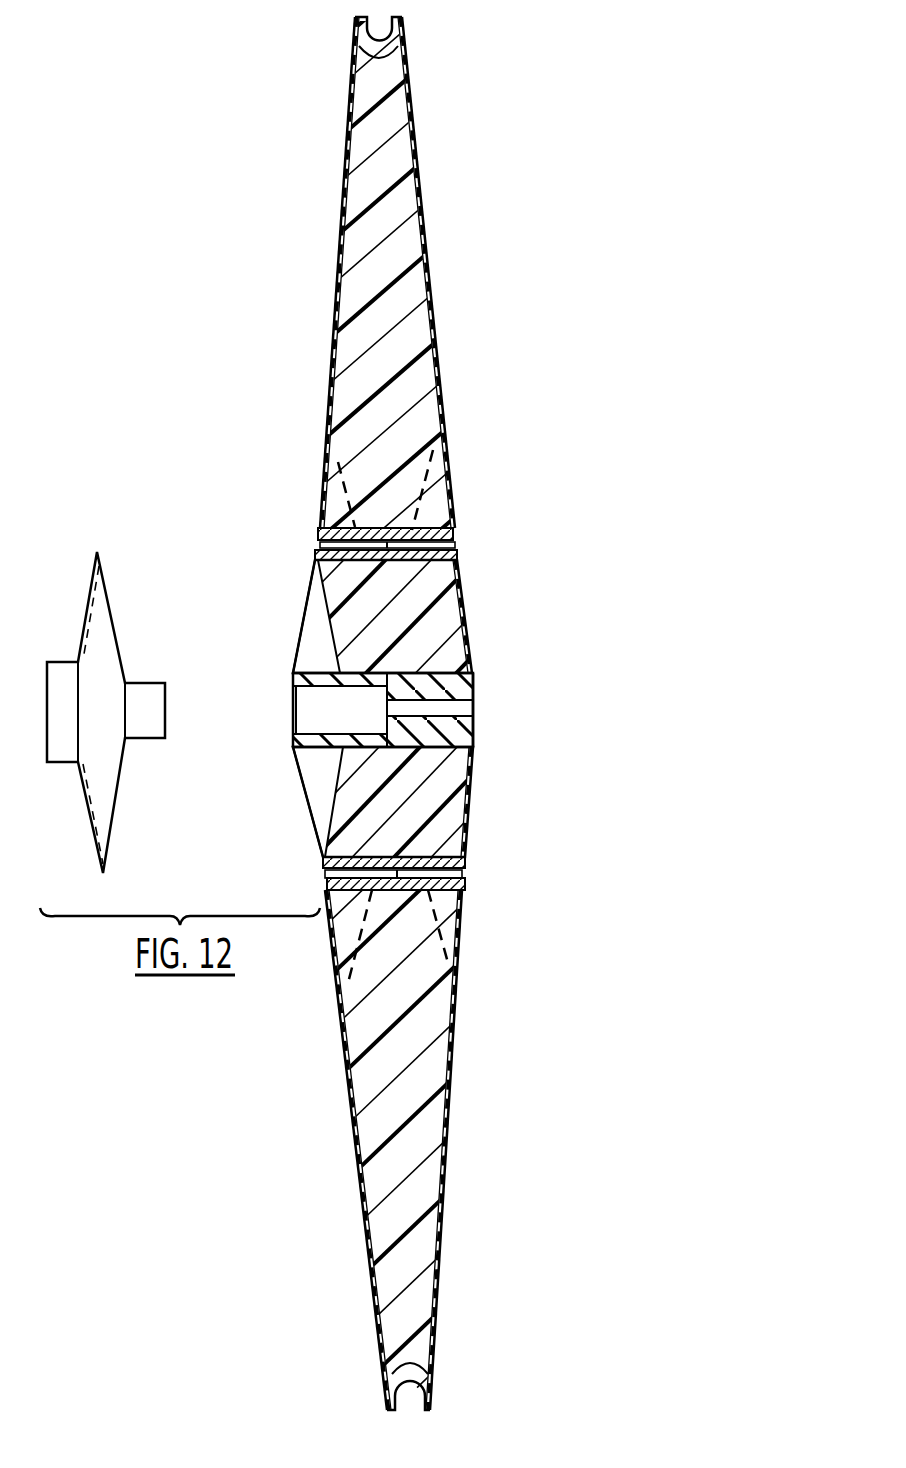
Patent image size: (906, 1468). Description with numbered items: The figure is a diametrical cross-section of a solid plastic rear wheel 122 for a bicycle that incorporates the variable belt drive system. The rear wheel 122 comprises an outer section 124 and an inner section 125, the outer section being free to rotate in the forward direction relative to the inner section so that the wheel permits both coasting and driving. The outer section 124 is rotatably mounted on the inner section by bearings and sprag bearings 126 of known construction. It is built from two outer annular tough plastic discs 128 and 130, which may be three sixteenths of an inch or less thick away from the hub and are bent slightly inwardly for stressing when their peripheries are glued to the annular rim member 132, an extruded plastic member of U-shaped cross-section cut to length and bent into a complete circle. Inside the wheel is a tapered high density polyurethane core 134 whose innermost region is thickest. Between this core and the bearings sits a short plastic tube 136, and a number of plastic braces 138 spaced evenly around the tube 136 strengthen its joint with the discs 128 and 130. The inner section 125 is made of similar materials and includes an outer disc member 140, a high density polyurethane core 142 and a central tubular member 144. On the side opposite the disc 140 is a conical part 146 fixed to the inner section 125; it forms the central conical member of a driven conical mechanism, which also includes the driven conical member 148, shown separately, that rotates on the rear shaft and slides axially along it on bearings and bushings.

The rear wheel 122 is at (488, 299).
The outer section 124 is at (420, 378).
The inner section 125 is at (450, 607).
The bearings and sprag bearings 126 is at (462, 888).
The outer annular plastic disc 128 is at (333, 318).
The outer annular plastic disc 130 is at (424, 222).
The rim member 132 is at (412, 1358).
The core 134 is at (443, 1012).
The plastic tube 136 is at (455, 530).
The plastic braces 138 is at (325, 465).
The outer disc member 140 is at (468, 805).
The high density polyurethane core 142 is at (445, 825).
The central tubular member 144 is at (473, 727).
The conical part 146 is at (313, 596).
The driven conical member 148 is at (148, 646).